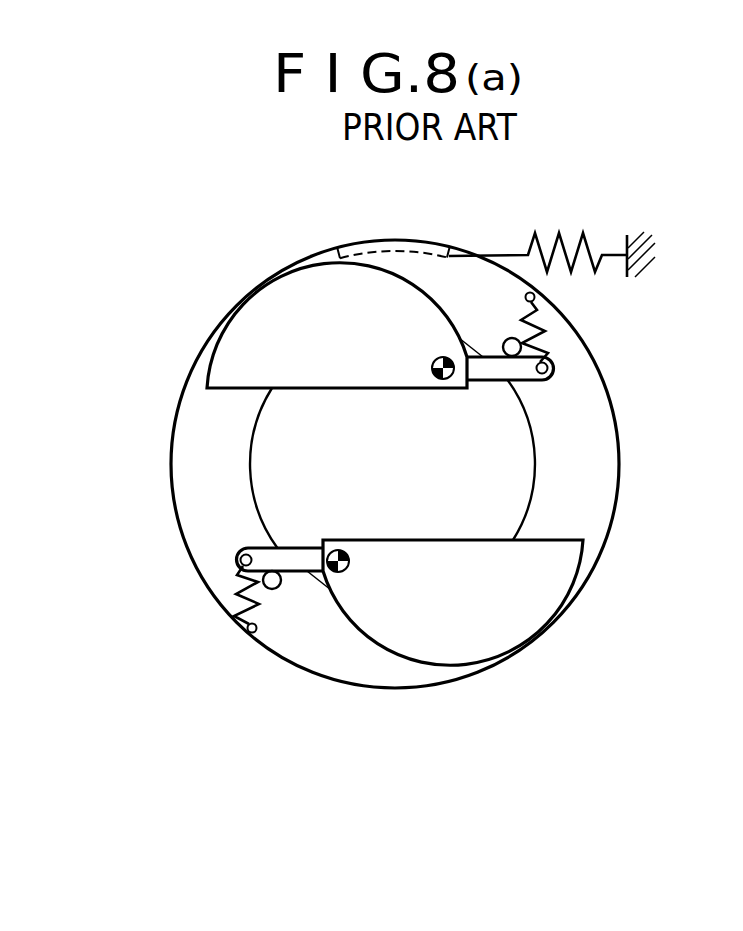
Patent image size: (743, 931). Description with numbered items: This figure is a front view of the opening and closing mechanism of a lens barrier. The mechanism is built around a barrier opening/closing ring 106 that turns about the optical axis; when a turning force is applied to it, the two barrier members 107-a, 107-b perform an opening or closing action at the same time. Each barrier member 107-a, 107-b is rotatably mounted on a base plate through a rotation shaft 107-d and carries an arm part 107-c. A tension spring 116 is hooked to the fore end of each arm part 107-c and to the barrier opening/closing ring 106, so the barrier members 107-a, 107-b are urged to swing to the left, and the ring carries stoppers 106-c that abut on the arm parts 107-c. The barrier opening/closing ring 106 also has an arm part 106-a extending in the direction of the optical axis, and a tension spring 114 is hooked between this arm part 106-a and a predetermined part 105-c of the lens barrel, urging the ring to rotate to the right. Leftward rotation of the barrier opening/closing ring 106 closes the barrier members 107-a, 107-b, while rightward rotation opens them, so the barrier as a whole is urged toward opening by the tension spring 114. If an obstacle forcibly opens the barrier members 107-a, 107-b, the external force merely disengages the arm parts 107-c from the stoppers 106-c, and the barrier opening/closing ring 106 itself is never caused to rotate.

The barrier opening/closing ring 106 is at (198, 432).
The arm part 106-a is at (392, 243).
The stopper 106-c is at (506, 340).
The barrier member 107-a is at (290, 303).
The barrier member 107-b is at (468, 603).
The arm part 107-c is at (490, 374).
The rotation shaft 107-d is at (447, 380).
The tension spring 114 is at (557, 240).
The predetermined part of the lens barrel 105-c is at (633, 242).
The tension spring 116 is at (540, 313).